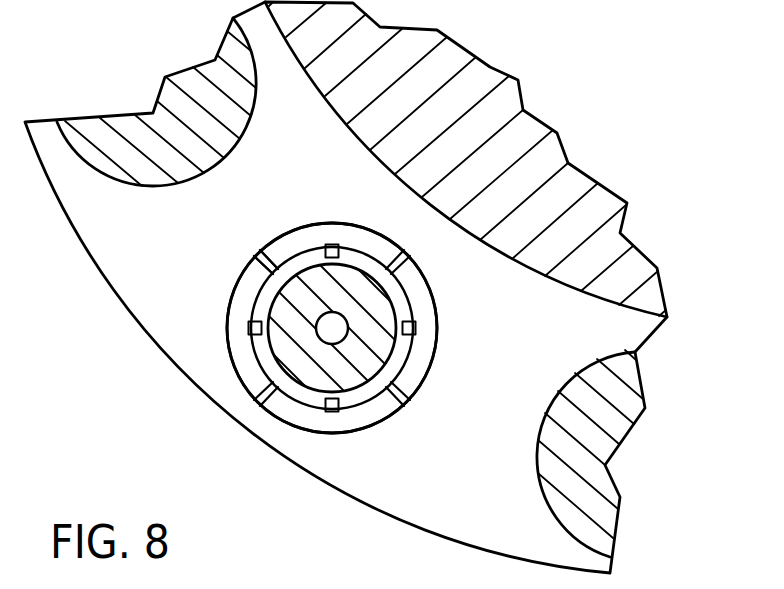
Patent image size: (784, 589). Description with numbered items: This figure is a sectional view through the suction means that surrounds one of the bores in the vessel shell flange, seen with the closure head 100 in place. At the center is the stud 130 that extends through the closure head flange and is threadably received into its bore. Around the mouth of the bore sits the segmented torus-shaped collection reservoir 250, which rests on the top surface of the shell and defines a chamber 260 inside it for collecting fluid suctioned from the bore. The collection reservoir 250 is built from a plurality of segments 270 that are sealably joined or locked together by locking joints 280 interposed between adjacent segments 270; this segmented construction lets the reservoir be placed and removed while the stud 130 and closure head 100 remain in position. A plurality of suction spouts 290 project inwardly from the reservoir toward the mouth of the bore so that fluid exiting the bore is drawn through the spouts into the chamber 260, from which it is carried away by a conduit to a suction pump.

The closure head 100 is at (397, 143).
The stud 130 is at (290, 350).
The collection reservoir 250 is at (428, 355).
The chamber 260 is at (353, 422).
The segments 270 is at (427, 282).
The locking joints 280 is at (266, 246).
The suction spouts 290 is at (253, 308).